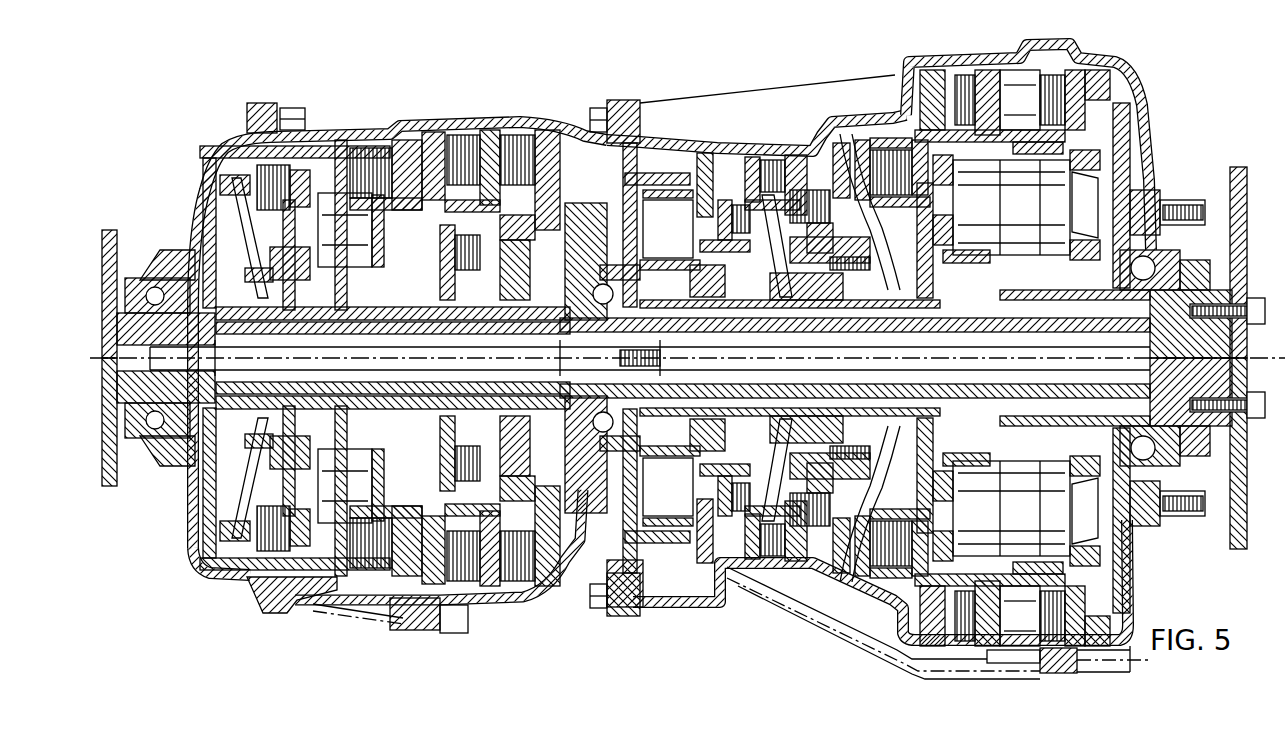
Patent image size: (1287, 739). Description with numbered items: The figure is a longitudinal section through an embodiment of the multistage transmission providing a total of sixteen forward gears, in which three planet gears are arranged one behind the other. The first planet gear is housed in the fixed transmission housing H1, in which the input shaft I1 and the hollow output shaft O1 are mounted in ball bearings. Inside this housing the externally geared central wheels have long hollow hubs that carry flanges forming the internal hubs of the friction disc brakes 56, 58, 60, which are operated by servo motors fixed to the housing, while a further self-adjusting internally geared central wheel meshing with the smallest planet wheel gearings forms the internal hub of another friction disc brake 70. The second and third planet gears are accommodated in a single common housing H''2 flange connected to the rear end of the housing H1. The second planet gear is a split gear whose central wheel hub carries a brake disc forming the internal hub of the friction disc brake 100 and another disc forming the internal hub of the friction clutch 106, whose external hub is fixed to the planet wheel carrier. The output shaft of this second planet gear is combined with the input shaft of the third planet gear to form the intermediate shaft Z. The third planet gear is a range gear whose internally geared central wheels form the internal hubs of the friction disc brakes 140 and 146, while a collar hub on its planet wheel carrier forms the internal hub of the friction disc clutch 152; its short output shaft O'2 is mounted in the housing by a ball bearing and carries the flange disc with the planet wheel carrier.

The input shaft I1 is at (137, 440).
The friction disc brake 70 is at (397, 130).
The friction disc brake 60 is at (468, 130).
The friction disc brake 58 is at (518, 130).
The friction disc brake 56 is at (562, 233).
The friction disc brake 100 is at (764, 150).
The friction clutch 106 is at (744, 225).
The friction disc clutch 152 is at (888, 150).
The intermediate shaft Z is at (912, 318).
The friction disc brake 140 is at (1002, 85).
The friction disc brake 146 is at (1087, 70).
The output shaft O'2 is at (1142, 230).
The transmission housing H1 is at (200, 566).
The common housing H''2 is at (898, 361).
The output shaft O1 is at (585, 372).